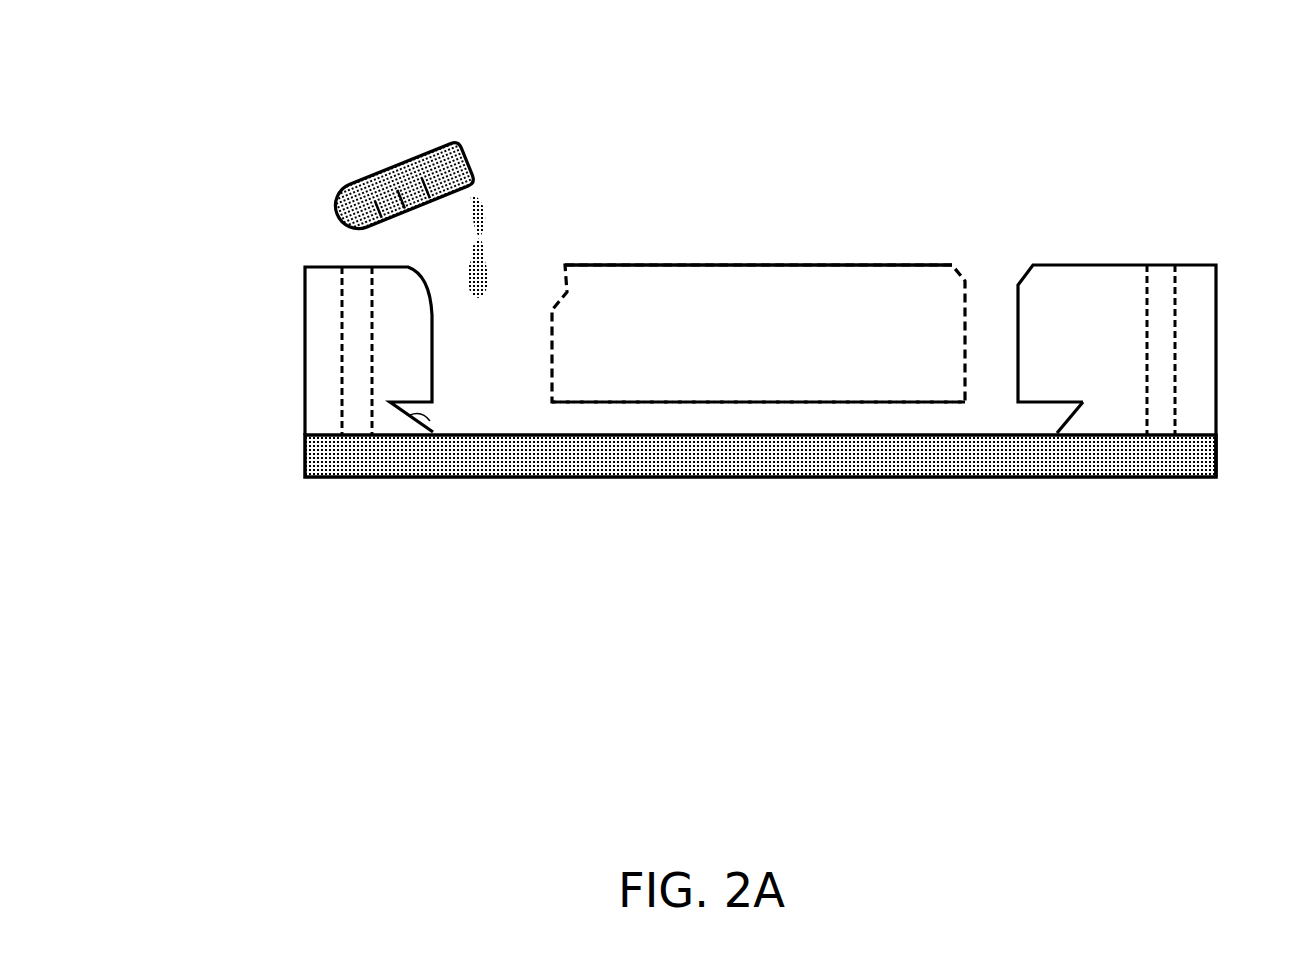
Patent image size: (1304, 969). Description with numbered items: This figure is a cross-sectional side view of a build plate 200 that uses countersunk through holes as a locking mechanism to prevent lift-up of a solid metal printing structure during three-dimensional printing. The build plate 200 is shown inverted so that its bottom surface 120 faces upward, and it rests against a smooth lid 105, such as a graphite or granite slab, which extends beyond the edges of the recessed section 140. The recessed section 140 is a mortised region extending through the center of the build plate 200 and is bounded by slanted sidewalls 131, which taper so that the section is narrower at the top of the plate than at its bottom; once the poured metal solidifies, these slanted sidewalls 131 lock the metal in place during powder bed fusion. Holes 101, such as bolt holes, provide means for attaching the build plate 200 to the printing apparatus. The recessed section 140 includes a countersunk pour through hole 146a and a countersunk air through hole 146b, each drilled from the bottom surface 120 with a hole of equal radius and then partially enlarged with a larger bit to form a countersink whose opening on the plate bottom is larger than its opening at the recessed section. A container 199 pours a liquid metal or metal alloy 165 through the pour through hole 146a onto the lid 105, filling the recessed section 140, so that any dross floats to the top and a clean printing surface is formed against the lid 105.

The holes 101 is at (1161, 280).
The lid 105 is at (892, 470).
The bottom surface 120 is at (787, 255).
The slanted sidewalls 131 is at (395, 423).
The recessed section 140 is at (661, 430).
The countersunk pour through hole 146a is at (514, 262).
The countersunk air through hole 146b is at (991, 259).
The liquid metal or metal alloy 165 is at (452, 237).
The container 199 is at (405, 137).
The build plate 200 is at (192, 442).